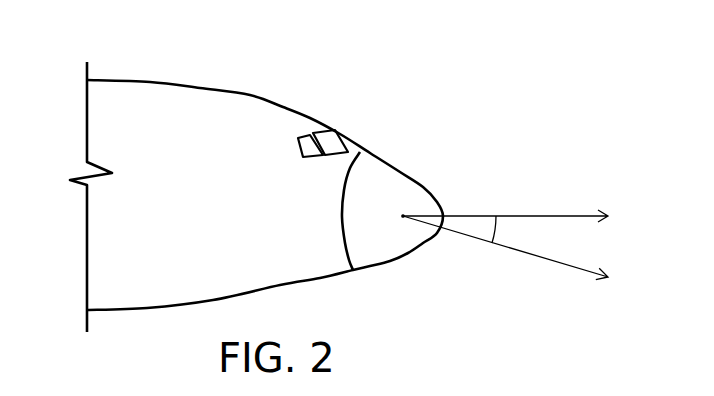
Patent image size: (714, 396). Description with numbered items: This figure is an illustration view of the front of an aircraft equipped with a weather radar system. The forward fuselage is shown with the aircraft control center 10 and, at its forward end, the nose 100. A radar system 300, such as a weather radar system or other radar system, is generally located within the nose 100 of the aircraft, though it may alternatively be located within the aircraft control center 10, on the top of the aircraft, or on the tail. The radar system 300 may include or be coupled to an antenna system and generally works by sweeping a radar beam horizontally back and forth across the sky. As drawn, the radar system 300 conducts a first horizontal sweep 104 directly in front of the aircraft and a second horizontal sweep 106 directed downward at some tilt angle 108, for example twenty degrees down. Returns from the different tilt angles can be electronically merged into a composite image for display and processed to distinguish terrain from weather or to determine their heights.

The aircraft control center 10 is at (137, 95).
The nose 100 is at (368, 170).
The radar system 300 is at (390, 217).
The first horizontal sweep 104 is at (580, 215).
The second horizontal sweep 106 is at (547, 265).
The tilt angle 108 is at (500, 217).